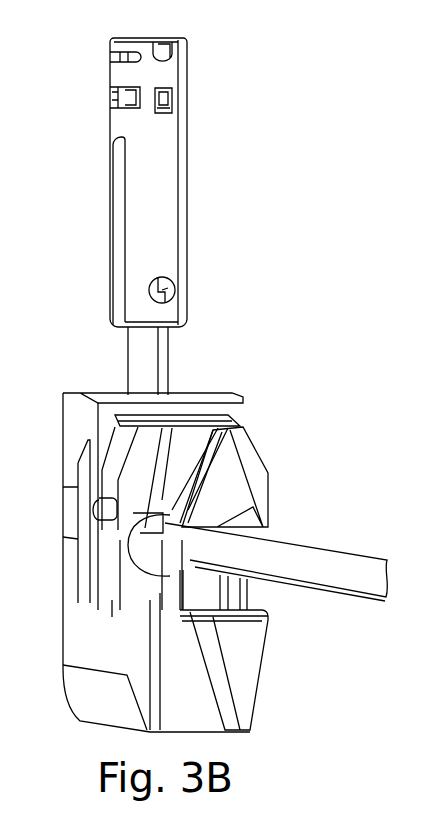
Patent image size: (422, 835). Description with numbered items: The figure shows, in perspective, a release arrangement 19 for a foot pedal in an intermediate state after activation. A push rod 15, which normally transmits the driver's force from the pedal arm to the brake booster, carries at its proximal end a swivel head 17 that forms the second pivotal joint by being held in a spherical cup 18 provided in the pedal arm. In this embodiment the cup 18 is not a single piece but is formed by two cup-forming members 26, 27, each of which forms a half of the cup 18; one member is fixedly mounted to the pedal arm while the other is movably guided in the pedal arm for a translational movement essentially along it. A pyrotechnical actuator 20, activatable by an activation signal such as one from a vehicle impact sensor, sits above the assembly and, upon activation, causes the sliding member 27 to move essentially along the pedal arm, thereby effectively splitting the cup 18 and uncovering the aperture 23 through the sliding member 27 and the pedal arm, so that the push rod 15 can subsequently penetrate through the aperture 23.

The pyrotechnical actuator 20 is at (198, 203).
The swivel head 17 is at (230, 458).
The cup-forming member 27 is at (232, 492).
The push rod 15 is at (337, 568).
The release arrangement 19 is at (287, 621).
The spherical cup 18 is at (222, 692).
The aperture 23 is at (133, 580).
The cup-forming member 26 is at (93, 700).